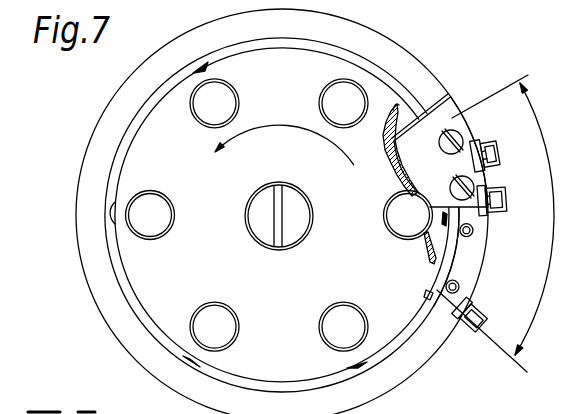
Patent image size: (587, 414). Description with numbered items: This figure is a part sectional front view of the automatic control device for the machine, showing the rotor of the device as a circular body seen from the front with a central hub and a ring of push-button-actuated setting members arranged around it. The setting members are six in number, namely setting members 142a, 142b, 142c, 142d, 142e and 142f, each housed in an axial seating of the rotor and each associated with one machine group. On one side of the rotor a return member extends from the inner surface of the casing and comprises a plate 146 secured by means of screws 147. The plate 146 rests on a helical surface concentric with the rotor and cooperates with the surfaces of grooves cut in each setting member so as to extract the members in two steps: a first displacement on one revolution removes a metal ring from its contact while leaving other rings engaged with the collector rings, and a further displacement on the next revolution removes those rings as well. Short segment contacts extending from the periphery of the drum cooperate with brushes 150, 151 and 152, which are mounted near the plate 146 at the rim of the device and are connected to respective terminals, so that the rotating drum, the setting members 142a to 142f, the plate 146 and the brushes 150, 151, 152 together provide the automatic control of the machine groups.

The setting member 142a is at (207, 103).
The setting member 142b is at (150, 223).
The setting member 142c is at (215, 317).
The setting member 142d is at (340, 320).
The setting member 142e is at (398, 212).
The setting member 142f is at (347, 93).
The plate 146 is at (427, 140).
The screws 147 is at (458, 137).
The brush 150 is at (467, 310).
The brush 151 is at (487, 213).
The brush 152 is at (477, 142).